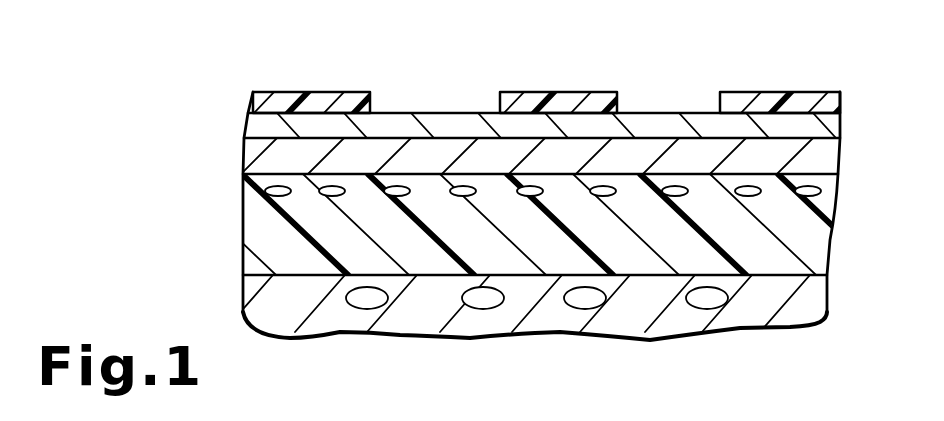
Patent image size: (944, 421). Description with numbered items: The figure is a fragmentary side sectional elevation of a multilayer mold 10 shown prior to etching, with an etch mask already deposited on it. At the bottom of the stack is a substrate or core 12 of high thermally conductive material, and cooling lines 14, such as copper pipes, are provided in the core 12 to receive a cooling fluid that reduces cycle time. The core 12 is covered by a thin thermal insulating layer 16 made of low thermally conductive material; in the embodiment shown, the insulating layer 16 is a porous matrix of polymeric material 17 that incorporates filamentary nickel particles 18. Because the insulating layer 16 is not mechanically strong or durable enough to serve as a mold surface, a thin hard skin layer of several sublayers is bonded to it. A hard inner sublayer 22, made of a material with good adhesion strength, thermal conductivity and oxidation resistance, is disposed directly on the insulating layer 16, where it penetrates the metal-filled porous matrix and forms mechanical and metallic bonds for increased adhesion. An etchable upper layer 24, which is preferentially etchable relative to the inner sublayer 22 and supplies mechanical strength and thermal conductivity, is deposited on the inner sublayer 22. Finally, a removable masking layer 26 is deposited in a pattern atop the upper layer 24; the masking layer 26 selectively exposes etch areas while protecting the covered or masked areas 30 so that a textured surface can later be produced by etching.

The multilayer mold 10 is at (763, 60).
The substrate or core 12 is at (806, 318).
The cooling lines 14 is at (708, 303).
The thermal insulating layer 16 is at (527, 227).
The porous matrix of polymeric material 17 is at (357, 195).
The filamentary nickel particles 18 is at (280, 197).
The hard inner sublayer 22 is at (244, 166).
The etchable upper layer 24 is at (246, 132).
The removable masking layer 26 is at (320, 92).
The masked areas 30 is at (252, 108).